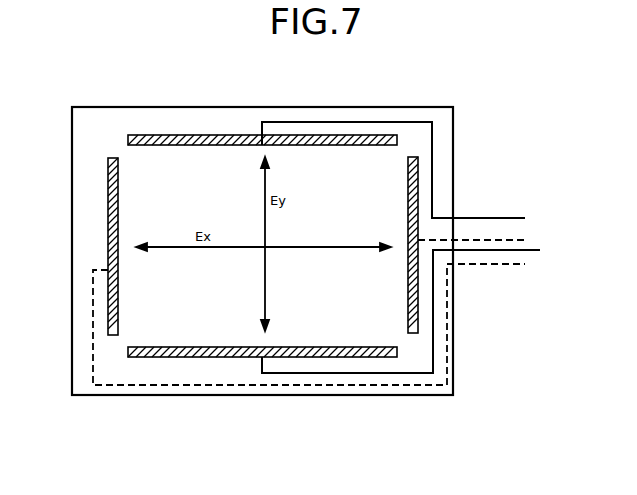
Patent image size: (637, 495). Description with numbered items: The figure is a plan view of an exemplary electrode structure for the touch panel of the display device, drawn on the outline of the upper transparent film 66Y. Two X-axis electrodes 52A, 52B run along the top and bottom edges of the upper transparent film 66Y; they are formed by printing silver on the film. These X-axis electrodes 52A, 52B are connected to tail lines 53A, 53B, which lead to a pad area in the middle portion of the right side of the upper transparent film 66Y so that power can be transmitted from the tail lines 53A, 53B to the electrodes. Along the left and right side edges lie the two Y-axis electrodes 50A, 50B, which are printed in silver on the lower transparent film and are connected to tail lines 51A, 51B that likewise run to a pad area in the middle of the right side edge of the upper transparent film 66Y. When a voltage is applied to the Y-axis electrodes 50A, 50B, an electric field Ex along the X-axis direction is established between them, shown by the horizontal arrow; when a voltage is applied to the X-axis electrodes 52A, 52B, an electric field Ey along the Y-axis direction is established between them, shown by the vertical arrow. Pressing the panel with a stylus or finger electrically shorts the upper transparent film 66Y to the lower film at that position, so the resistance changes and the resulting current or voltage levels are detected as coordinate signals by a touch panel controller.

The upper transparent film 66Y is at (440, 107).
The X-axis electrode 52A is at (243, 135).
The X-axis electrode 52B is at (167, 357).
The Y-axis electrode 50A is at (108, 193).
The Y-axis electrode 50B is at (418, 191).
The tail line 51A is at (518, 240).
The tail line 51B is at (518, 264).
The tail line 53A is at (515, 218).
The tail line 53B is at (416, 308).